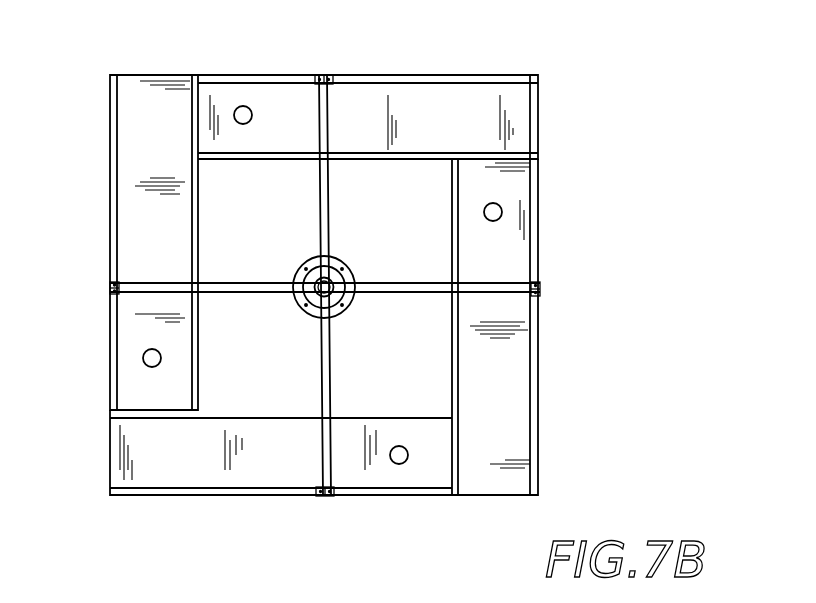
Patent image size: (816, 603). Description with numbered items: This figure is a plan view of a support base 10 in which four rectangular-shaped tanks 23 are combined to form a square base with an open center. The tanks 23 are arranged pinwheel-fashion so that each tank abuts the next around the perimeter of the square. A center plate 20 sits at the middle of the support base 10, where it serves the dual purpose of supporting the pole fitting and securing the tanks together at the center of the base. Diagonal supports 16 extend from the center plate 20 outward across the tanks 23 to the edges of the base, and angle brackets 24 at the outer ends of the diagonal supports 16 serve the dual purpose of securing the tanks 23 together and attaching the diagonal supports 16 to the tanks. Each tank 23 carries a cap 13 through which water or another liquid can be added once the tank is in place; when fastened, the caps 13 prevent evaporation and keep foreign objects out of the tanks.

The support base 10 is at (578, 177).
The cap 13 is at (247, 106).
The diagonal support 16 is at (328, 112).
The center plate 20 is at (342, 252).
The rectangular-shaped tank 23 is at (463, 77).
The angle bracket 24 is at (327, 75).